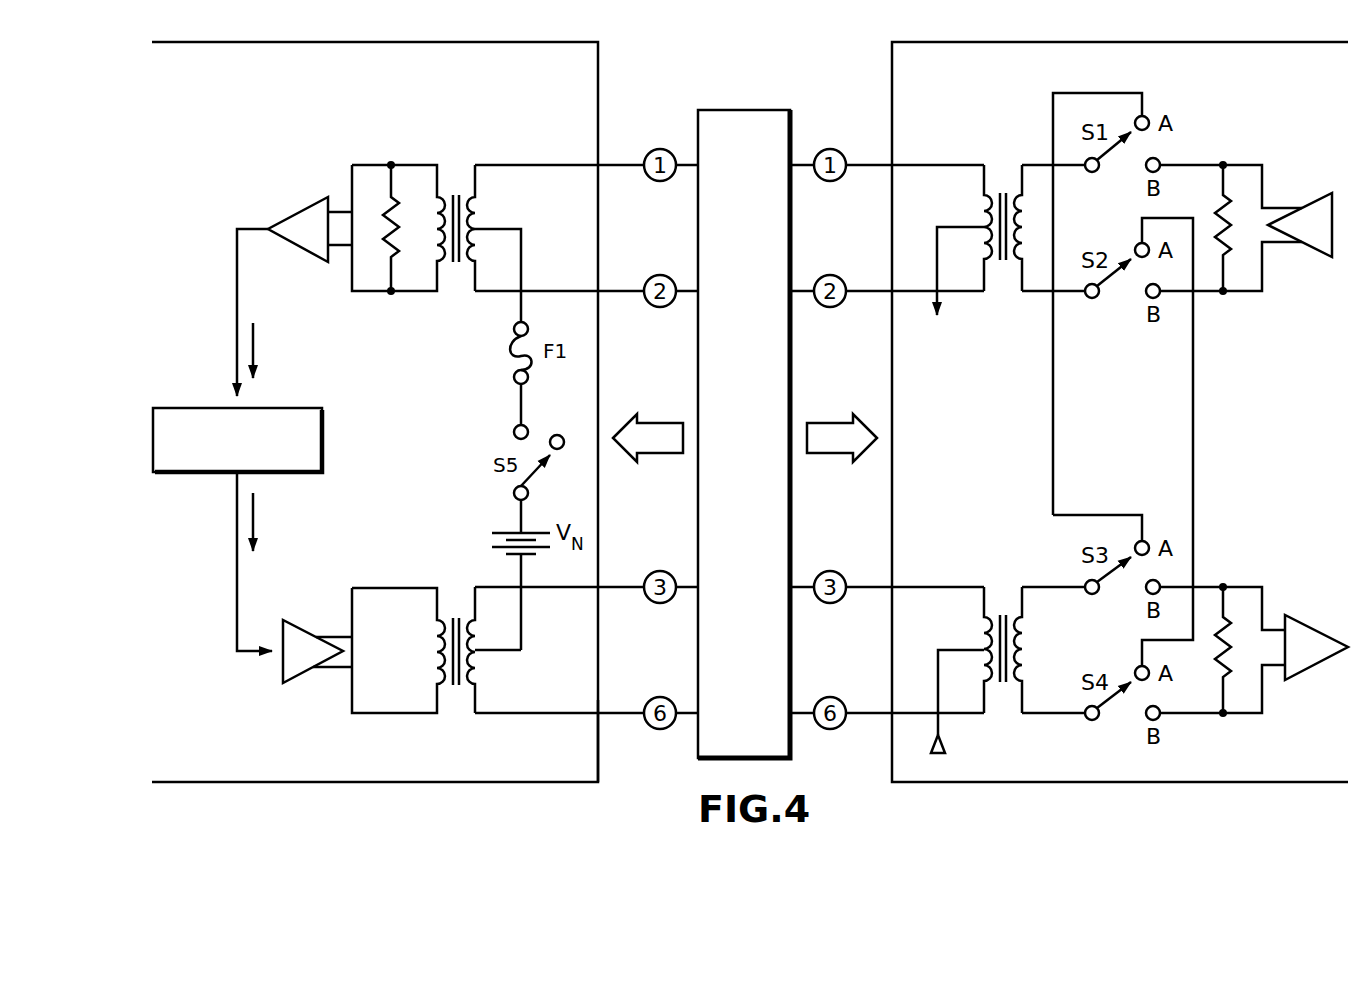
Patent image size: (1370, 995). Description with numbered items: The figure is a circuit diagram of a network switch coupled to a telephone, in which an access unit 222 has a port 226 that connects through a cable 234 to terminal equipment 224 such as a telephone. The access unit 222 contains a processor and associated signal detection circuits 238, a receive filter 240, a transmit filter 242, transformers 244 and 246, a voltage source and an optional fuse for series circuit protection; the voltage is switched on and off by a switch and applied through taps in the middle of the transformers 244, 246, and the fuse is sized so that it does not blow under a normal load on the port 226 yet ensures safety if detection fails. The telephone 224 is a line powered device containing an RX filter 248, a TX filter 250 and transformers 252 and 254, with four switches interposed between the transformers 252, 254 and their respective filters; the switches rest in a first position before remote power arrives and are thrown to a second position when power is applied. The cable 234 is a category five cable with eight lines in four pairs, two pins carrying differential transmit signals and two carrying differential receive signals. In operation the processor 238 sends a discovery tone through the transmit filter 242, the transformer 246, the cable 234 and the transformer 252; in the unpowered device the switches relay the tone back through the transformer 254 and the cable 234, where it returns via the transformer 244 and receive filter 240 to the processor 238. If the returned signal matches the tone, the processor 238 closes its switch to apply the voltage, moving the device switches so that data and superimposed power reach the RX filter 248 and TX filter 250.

The access unit 222 is at (598, 70).
The terminal equipment 224 is at (892, 72).
The port 226 is at (606, 744).
The cable 234 is at (745, 110).
The processor and associated signal detection circuits 238 is at (184, 408).
The receive (RX) filter 240 is at (284, 178).
The transmit (TX) filter 242 is at (288, 710).
The transformer 244 is at (463, 180).
The transformer 246 is at (459, 605).
The RX filter 248 is at (1316, 600).
The TX filter 250 is at (1316, 168).
The transformer 252 is at (1003, 603).
The transformer 254 is at (1003, 180).